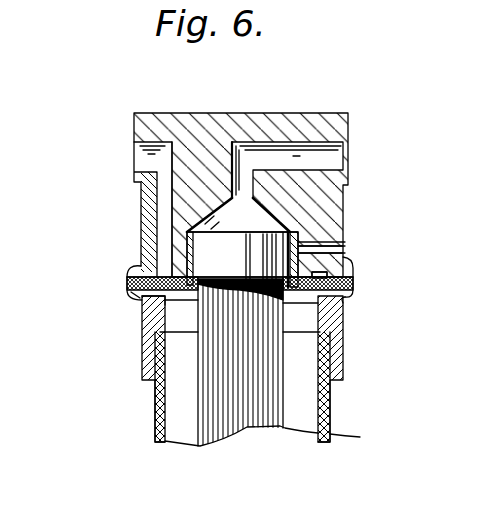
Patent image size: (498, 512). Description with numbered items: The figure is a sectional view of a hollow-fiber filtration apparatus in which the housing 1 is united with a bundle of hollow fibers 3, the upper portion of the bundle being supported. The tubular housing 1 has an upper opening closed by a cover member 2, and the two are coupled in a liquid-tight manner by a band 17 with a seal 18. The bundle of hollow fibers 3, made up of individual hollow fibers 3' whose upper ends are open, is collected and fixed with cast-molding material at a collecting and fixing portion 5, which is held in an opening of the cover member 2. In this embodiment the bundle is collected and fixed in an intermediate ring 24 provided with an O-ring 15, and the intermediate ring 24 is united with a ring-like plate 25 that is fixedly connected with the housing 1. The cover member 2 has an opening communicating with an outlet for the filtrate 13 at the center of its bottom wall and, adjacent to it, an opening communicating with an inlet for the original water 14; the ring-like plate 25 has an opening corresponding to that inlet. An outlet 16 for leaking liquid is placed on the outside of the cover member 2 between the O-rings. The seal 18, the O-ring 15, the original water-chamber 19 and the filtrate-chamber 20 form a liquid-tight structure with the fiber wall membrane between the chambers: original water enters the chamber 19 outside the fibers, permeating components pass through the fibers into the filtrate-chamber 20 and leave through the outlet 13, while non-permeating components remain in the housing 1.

The tubular housing 1 is at (360, 437).
The cover member 2 is at (313, 118).
The bundle of hollow fibers 3 is at (304, 364).
The hollow fiber 3' is at (285, 387).
The collecting and fixing portion 5 is at (296, 232).
The outlet for the filtrate 13 is at (343, 157).
The inlet for the original water 14 is at (134, 150).
The O-ring 15 is at (187, 241).
The outlet for leaking liquid 16 is at (345, 243).
The band 17 is at (130, 279).
The seal 18 is at (132, 295).
The original water-chamber 19 is at (177, 404).
The filtrate-chamber 20 is at (268, 218).
The intermediate ring 24 is at (300, 246).
The ring-like plate 25 is at (303, 290).